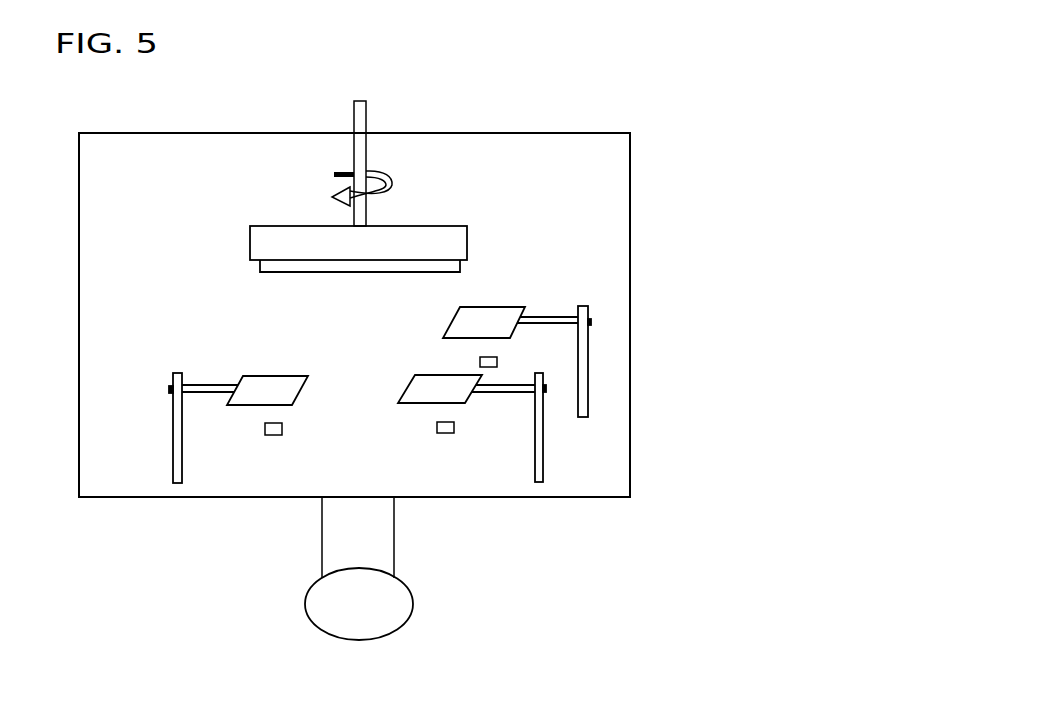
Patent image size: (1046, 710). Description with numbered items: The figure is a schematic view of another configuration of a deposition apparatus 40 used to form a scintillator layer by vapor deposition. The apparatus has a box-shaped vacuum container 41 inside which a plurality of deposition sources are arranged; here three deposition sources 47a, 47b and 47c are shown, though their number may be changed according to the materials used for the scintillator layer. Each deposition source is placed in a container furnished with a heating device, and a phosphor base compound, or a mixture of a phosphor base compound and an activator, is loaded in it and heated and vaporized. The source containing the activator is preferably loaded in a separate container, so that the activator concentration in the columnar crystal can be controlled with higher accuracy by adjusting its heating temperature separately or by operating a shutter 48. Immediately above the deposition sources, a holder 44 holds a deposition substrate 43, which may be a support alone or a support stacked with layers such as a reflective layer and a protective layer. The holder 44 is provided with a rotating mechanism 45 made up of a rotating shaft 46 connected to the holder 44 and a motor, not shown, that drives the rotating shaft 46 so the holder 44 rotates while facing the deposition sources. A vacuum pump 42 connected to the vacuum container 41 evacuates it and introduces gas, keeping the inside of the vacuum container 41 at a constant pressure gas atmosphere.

The deposition apparatus 40 is at (412, 117).
The vacuum container 41 is at (631, 160).
The vacuum pump 42 is at (413, 601).
The deposition substrate 43 is at (462, 264).
The holder 44 is at (450, 226).
The rotating mechanism 45 is at (382, 208).
The rotating shaft 46 is at (354, 150).
The deposition source 47a is at (266, 436).
The deposition source 47b is at (445, 434).
The deposition source 47c is at (497, 361).
The shutter 48 is at (462, 319).